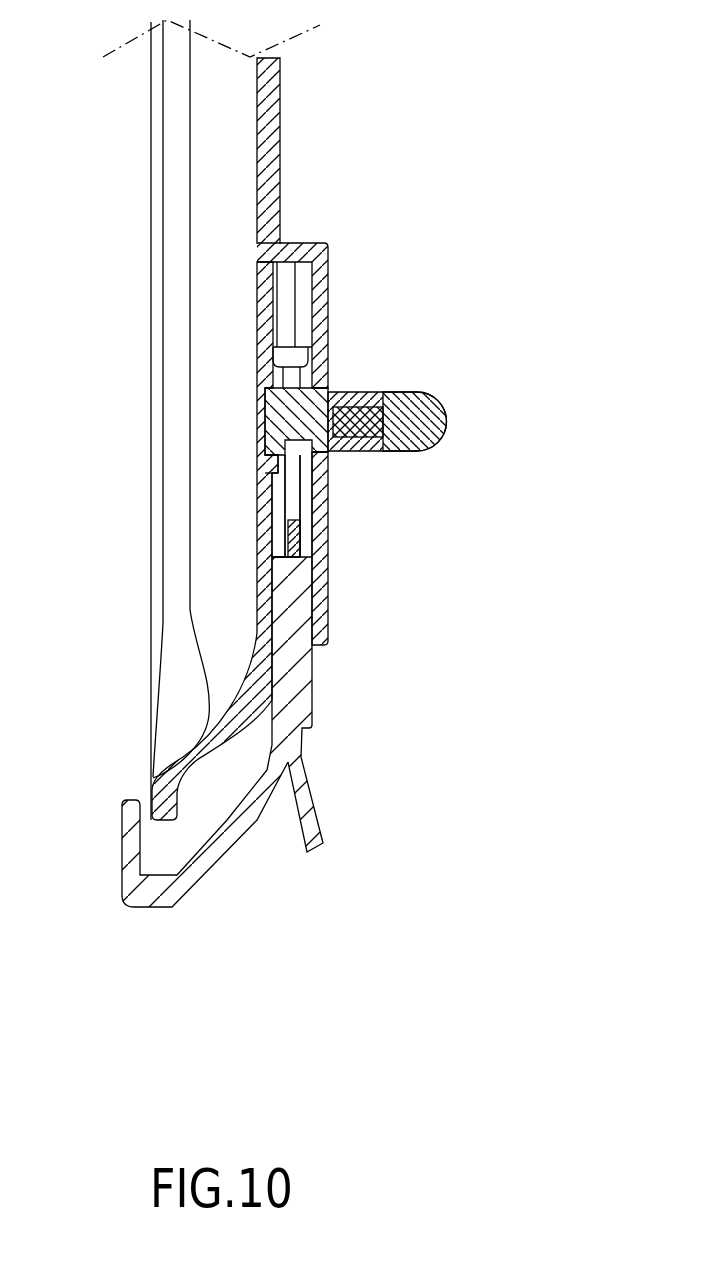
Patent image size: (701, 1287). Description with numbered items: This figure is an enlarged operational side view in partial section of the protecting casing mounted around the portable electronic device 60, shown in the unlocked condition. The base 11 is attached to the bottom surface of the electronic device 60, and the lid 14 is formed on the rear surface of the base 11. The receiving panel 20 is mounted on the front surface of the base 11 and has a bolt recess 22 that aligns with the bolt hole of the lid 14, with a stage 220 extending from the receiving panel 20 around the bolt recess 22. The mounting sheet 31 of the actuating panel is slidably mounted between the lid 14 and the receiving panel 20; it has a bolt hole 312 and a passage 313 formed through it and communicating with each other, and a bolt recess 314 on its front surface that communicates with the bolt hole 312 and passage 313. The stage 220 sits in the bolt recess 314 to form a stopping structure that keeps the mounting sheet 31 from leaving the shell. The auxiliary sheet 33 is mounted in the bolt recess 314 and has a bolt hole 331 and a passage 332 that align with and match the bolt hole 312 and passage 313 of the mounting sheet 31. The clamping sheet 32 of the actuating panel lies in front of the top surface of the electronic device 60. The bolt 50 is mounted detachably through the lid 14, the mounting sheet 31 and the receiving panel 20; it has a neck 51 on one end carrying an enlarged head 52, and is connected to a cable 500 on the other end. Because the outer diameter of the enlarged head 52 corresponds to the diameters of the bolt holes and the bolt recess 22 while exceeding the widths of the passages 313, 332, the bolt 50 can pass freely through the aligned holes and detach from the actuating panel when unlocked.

The base 11 is at (277, 97).
The lid 14 is at (322, 303).
The receiving panel 20 is at (262, 316).
The bolt recess 22 is at (265, 452).
The stage 220 is at (272, 476).
The mounting sheet 31 is at (297, 698).
The bolt hole 312 is at (320, 388).
The passage 313 is at (305, 500).
The bolt recess 314 is at (275, 507).
The clamping sheet 32 is at (190, 885).
The auxiliary sheet 33 is at (283, 378).
The bolt hole 331 is at (265, 396).
The passage 332 is at (293, 510).
The bolt 50 is at (360, 395).
The cable 500 is at (435, 412).
The neck 51 is at (312, 428).
The enlarged head 52 is at (270, 420).
The electronic device 60 is at (158, 623).